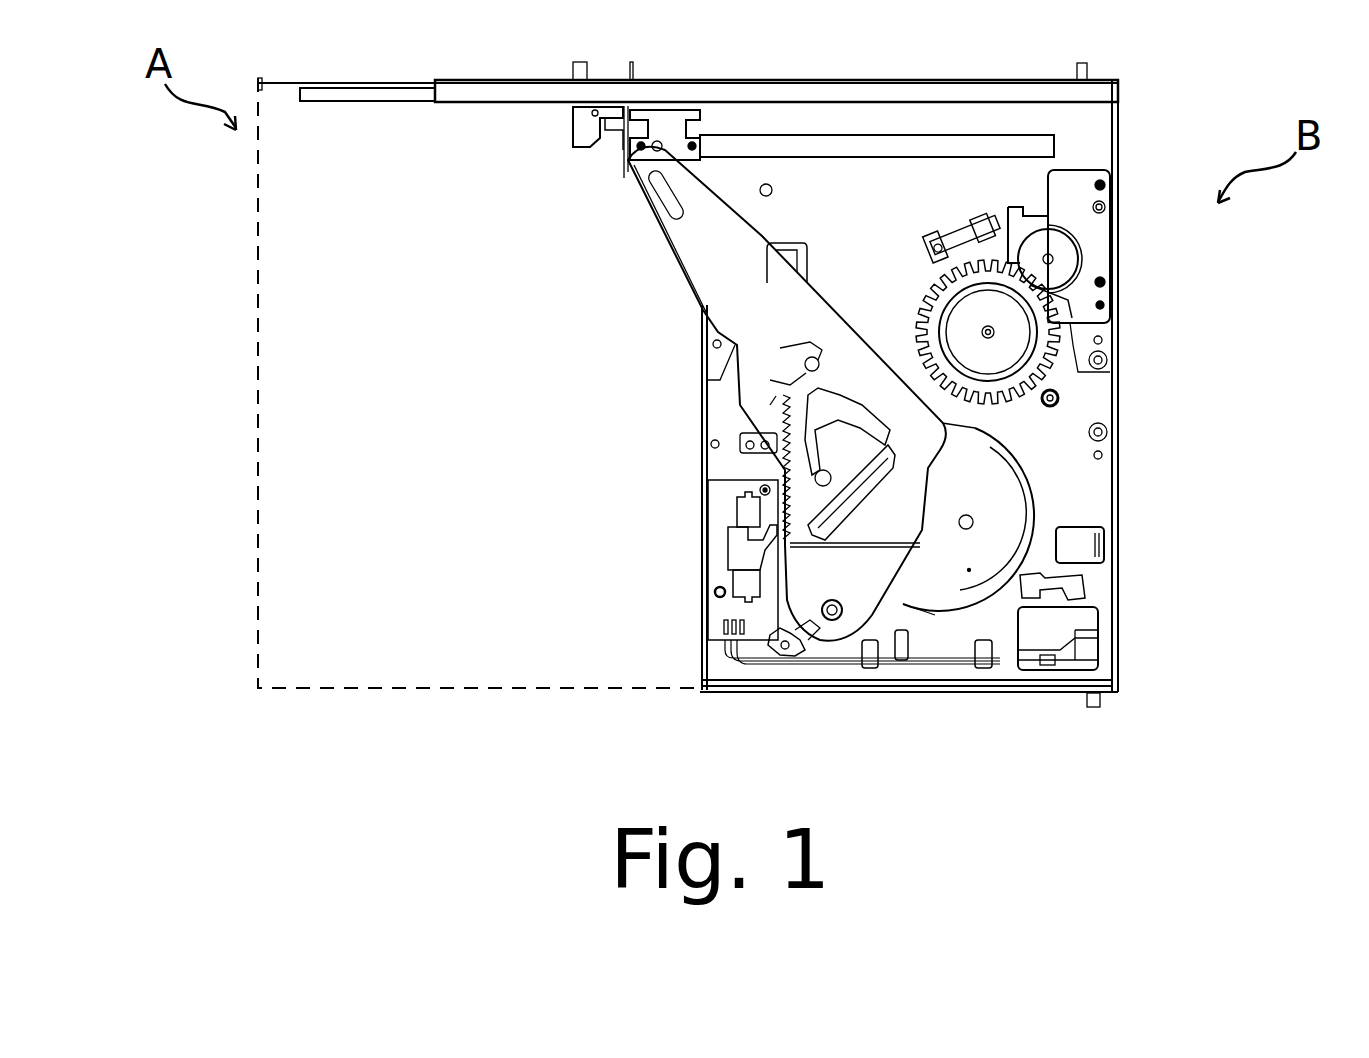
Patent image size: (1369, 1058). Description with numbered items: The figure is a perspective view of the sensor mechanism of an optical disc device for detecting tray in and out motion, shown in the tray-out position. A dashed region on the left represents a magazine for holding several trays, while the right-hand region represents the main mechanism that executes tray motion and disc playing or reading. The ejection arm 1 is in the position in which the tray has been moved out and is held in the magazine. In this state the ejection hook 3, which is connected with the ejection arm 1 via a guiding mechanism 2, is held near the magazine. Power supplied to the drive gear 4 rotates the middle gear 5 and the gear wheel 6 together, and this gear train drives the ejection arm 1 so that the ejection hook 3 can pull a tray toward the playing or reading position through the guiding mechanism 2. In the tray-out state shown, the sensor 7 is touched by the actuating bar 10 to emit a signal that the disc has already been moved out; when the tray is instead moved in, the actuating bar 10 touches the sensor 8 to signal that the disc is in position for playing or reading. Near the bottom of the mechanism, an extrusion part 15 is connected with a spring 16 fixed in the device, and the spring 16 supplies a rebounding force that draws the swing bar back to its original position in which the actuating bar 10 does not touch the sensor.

The ejection arm 1 is at (740, 277).
The guiding mechanism 2 is at (668, 122).
The ejection hook 3 is at (580, 128).
The drive gear 4 is at (1057, 295).
The middle gear 5 is at (1042, 340).
The gear wheel 6 is at (973, 550).
The sensor 7 is at (748, 582).
The sensor 8 is at (742, 512).
The actuating bar 10 is at (737, 548).
The extrusion part 15 is at (817, 637).
The spring 16 is at (805, 630).